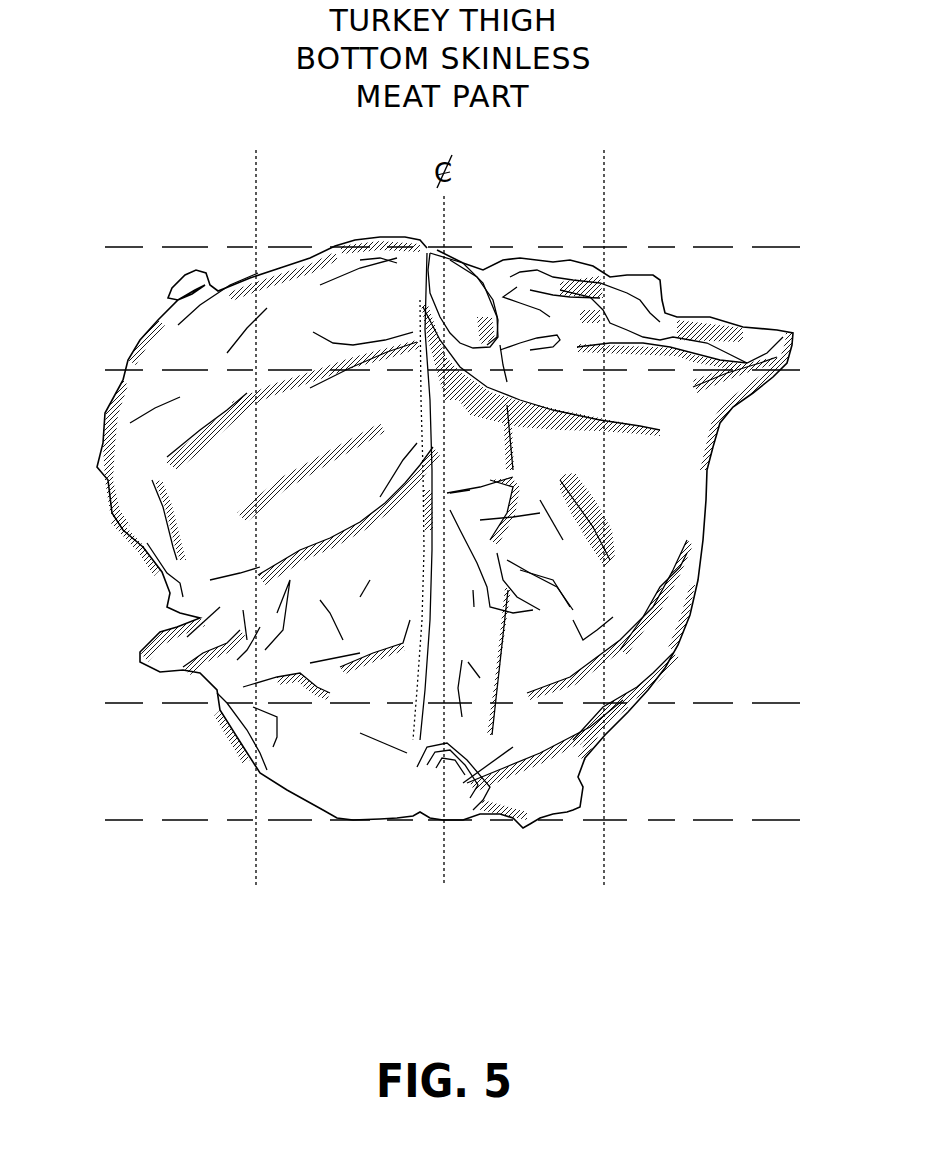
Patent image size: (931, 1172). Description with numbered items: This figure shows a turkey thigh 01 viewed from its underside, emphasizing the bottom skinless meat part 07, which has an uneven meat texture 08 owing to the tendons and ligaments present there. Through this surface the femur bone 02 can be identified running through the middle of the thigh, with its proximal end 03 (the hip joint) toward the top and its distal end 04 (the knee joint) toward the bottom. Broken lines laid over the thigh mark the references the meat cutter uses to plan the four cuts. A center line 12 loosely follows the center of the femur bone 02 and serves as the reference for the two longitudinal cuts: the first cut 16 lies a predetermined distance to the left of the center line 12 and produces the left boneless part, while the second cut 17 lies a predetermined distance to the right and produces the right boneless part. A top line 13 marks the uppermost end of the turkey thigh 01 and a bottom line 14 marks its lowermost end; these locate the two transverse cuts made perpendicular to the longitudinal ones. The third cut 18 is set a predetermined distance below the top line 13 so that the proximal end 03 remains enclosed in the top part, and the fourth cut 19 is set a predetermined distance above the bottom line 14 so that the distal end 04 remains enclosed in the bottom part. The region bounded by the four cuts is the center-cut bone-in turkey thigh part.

The turkey thigh 01 is at (686, 465).
The femur bone 02 is at (519, 450).
The proximal end 03 is at (415, 297).
The distal end 04 is at (405, 778).
The bottom skinless meat part 07 is at (735, 448).
The uneven meat texture 08 is at (673, 459).
The center line 12 is at (444, 565).
The top line 13 is at (66, 247).
The bottom line 14 is at (66, 820).
The first cut 16 is at (256, 542).
The second cut 17 is at (604, 542).
The third cut 18 is at (66, 370).
The fourth cut 19 is at (66, 703).